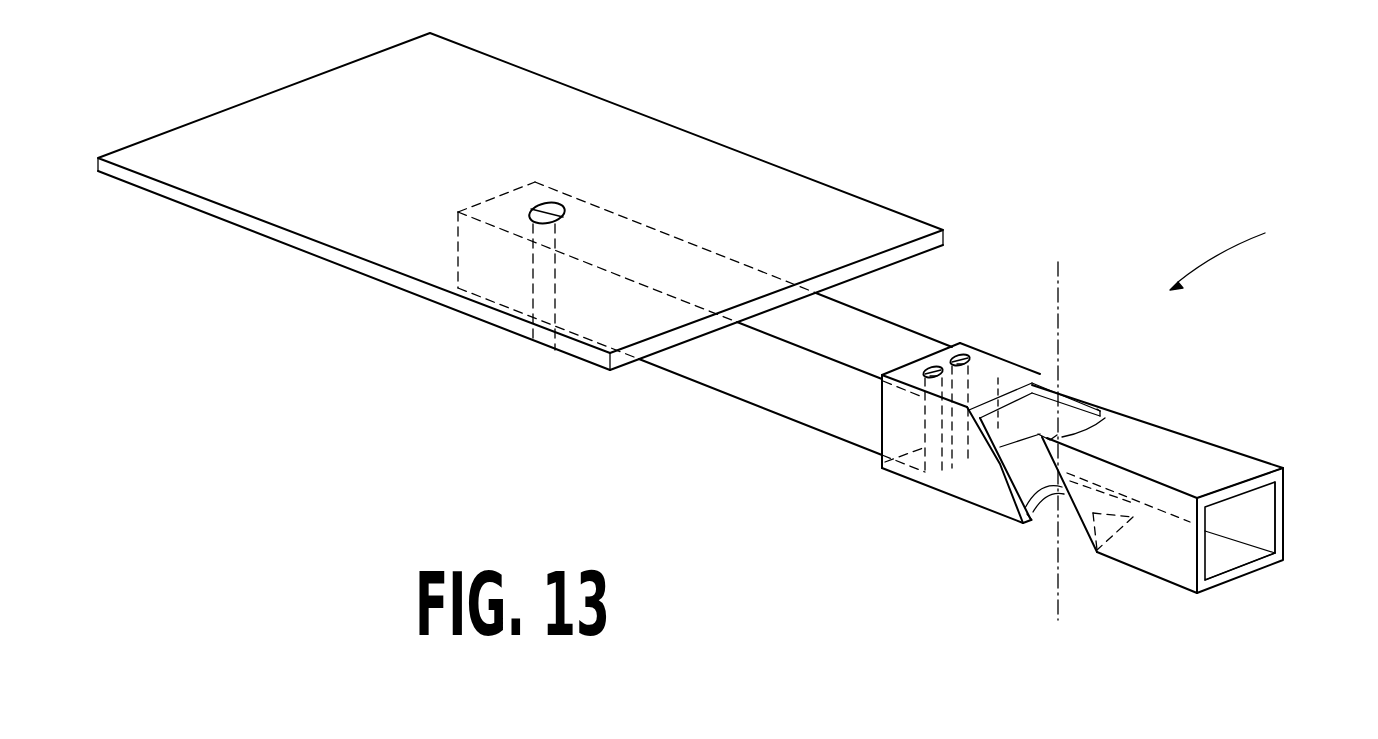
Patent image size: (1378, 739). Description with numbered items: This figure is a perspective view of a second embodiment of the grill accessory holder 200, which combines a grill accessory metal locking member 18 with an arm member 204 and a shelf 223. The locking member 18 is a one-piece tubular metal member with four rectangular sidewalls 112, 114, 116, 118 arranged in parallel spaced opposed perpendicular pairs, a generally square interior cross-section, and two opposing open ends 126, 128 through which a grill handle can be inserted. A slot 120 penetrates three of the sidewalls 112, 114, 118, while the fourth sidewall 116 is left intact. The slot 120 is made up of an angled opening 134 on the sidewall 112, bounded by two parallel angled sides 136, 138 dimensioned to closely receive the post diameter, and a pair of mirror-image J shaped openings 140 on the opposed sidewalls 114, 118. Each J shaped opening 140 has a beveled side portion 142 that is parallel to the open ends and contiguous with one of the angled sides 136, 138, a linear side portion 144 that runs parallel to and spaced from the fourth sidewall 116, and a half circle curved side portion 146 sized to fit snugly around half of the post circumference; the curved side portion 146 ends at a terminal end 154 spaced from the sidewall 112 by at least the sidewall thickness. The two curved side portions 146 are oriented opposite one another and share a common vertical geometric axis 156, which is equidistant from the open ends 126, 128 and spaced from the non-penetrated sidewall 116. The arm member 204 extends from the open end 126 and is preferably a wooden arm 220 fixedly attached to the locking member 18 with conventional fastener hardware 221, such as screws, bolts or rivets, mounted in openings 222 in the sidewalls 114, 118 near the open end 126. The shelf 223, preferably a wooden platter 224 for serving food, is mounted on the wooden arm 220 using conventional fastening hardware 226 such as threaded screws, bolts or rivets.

The locking member 18 is at (1200, 437).
The sidewall 112 is at (1172, 561).
The sidewall 114 is at (1218, 476).
The fourth sidewall 116 is at (1253, 533).
The sidewall 118 is at (1241, 568).
The slot 120 is at (1077, 381).
The open end 126 is at (880, 452).
The open end 128 is at (1289, 519).
The angled opening 134 is at (1003, 480).
The angled side 136 is at (1017, 525).
The angled side 138 is at (1062, 465).
The J shaped opening 140 is at (1100, 422).
The beveled side portion 142 is at (1063, 378).
The linear side portion 144 is at (1118, 386).
The curved side portion 146 is at (1130, 417).
The terminal end 154 is at (1050, 438).
The vertical geometric axis 156 is at (1085, 428).
The grill accessory holder 200 is at (1242, 249).
The arm member 204 is at (897, 327).
The wooden arm 220 is at (855, 308).
The fastener hardware 221 is at (985, 366).
The openings 222 is at (963, 352).
The shelf 223 is at (590, 92).
The wooden platter 224 is at (830, 185).
The fastening hardware 226 is at (571, 193).